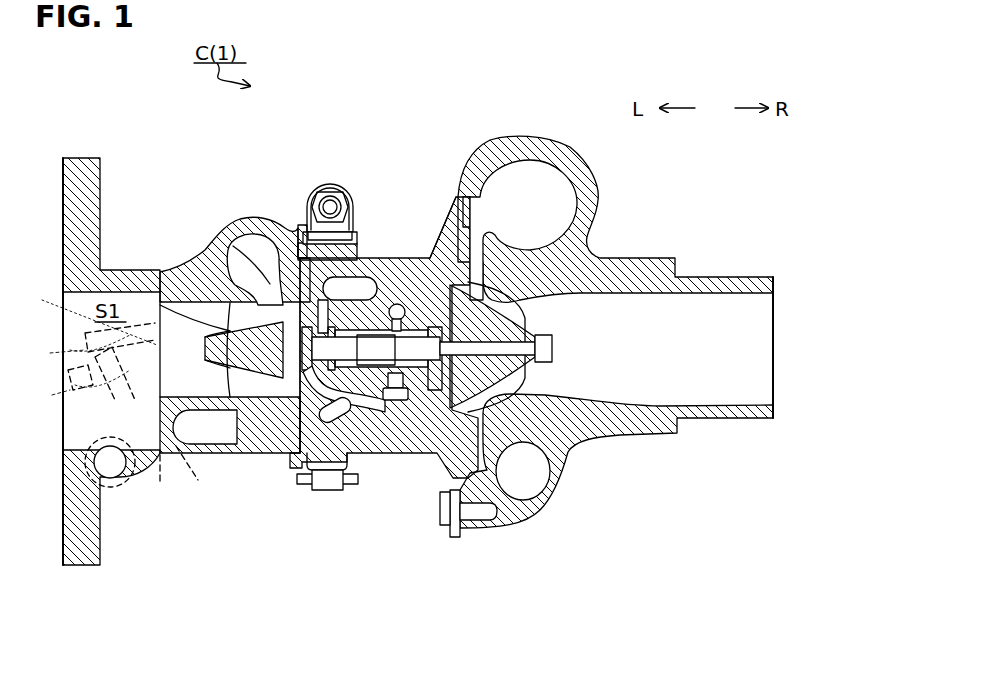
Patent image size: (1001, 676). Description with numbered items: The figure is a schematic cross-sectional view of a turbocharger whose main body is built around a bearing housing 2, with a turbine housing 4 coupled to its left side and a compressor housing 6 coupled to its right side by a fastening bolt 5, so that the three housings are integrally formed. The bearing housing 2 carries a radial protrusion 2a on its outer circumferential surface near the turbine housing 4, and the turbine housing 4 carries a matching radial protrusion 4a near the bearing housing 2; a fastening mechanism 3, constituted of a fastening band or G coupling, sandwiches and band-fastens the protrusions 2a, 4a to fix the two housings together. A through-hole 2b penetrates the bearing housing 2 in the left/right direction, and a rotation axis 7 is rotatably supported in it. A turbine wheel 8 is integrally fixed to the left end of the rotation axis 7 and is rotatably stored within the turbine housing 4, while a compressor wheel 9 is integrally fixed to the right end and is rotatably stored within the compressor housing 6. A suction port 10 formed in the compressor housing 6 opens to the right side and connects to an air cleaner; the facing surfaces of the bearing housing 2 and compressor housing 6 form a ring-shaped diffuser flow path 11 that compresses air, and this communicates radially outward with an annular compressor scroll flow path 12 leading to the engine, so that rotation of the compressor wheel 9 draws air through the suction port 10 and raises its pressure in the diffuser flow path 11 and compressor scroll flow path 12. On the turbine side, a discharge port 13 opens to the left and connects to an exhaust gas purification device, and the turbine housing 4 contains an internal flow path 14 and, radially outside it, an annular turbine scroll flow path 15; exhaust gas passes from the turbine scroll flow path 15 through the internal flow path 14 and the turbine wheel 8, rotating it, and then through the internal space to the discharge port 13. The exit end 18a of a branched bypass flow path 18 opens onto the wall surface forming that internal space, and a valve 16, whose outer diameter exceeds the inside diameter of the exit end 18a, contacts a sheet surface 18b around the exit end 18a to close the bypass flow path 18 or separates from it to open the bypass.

The bearing housing 2 is at (378, 258).
The protrusion 2a is at (338, 244).
The through-hole 2b is at (368, 388).
The fastening mechanism 3 is at (327, 173).
The turbine housing 4 is at (128, 270).
The protrusion 4a is at (316, 238).
The fastening bolt 5 is at (450, 533).
The compressor housing 6 is at (517, 140).
The rotation axis 7 is at (385, 405).
The turbine wheel 8 is at (63, 256).
The compressor wheel 9 is at (552, 360).
The suction port 10 is at (776, 382).
The diffuser flow path 11 is at (473, 228).
The compressor scroll flow path 12 is at (522, 461).
The discharge port 13 is at (62, 342).
The internal flow path 14 is at (228, 256).
The turbine scroll flow path 15 is at (248, 247).
The valve 16 is at (62, 443).
The bypass flow path 18 is at (84, 317).
The exit end 18a is at (41, 396).
The sheet surface 18b is at (48, 356).